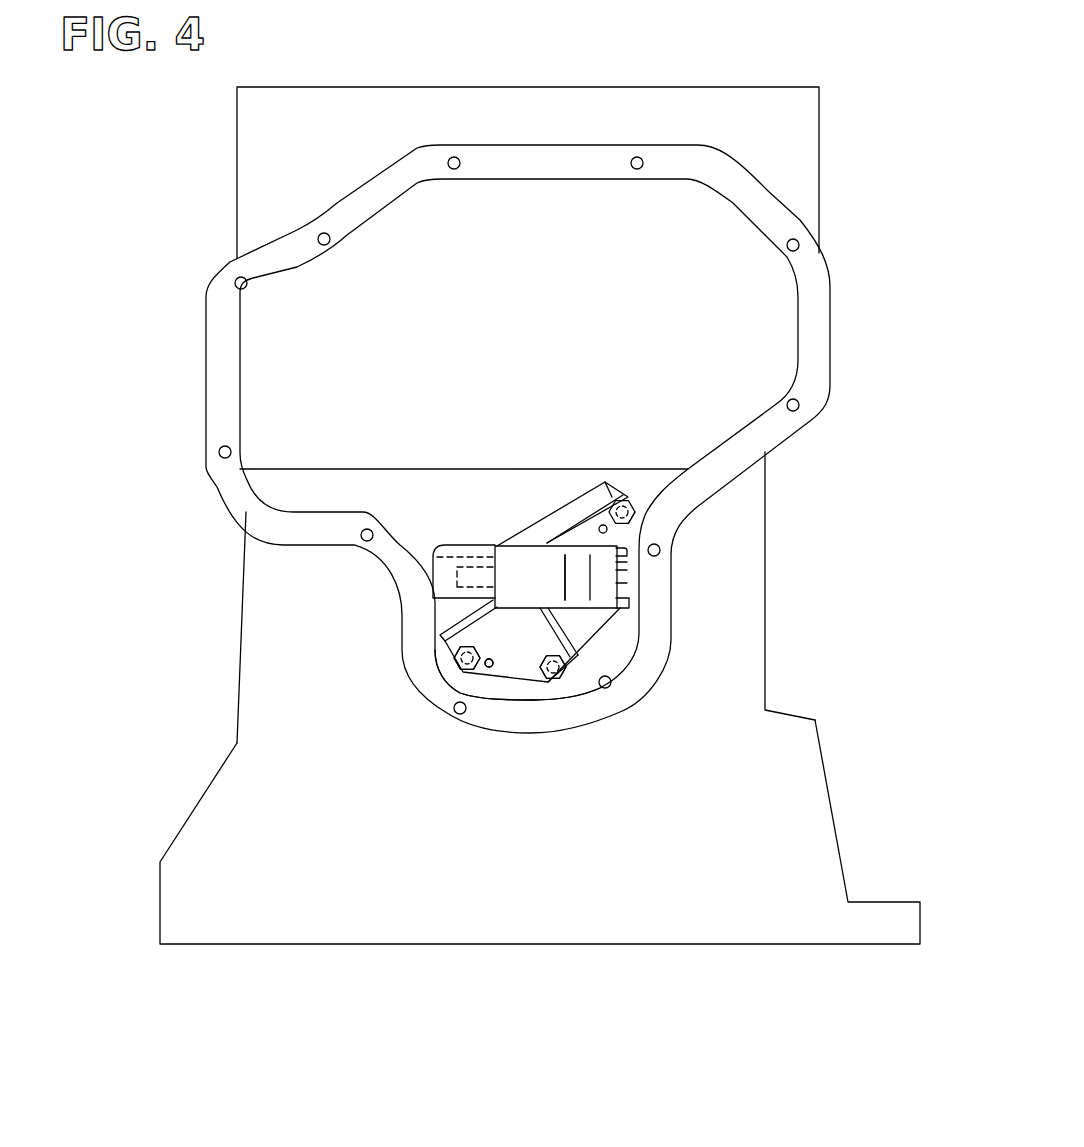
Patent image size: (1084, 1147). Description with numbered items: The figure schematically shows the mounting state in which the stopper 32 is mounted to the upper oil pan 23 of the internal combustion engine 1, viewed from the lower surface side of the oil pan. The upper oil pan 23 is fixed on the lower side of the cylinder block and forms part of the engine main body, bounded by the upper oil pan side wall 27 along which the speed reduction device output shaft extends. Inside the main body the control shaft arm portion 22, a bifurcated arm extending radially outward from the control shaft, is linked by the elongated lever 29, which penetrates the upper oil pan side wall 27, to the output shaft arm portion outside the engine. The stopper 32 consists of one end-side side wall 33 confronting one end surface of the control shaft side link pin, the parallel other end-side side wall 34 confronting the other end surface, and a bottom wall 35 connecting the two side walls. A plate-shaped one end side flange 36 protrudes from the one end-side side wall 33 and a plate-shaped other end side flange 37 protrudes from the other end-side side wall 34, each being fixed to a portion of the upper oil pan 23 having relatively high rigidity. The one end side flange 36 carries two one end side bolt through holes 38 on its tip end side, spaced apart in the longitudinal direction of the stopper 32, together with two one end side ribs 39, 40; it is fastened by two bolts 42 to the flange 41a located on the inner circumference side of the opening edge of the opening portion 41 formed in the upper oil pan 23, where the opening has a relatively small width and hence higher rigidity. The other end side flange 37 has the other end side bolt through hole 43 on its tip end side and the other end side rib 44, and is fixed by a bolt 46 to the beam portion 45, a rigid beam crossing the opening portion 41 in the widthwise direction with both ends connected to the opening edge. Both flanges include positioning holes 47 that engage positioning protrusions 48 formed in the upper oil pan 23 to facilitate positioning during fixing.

The internal combustion engine 1 is at (833, 127).
The control shaft arm portion 22 is at (450, 567).
The upper oil pan 23 is at (742, 653).
The upper oil pan side wall 27 is at (766, 683).
The lever 29 is at (625, 579).
The stopper 32 is at (527, 524).
The one end-side side wall 33 is at (570, 632).
The other end-side side wall 34 is at (540, 543).
The bottom wall 35 is at (508, 560).
The one end side flange 36 is at (512, 670).
The other end side flange 37 is at (578, 503).
The one end side bolt through hole 38 is at (456, 644).
The one end side rib 39 is at (460, 617).
The one end side rib 40 is at (580, 673).
The opening portion 41 is at (247, 385).
The flange 41a is at (443, 703).
The bolt 42 is at (451, 655).
The other end side bolt through hole 43 is at (636, 500).
The other end side rib 44 is at (604, 481).
The beam portion 45 is at (316, 488).
The bolt 46 is at (637, 513).
The positioning hole 47 is at (608, 531).
The positioning protrusion 48 is at (570, 548).